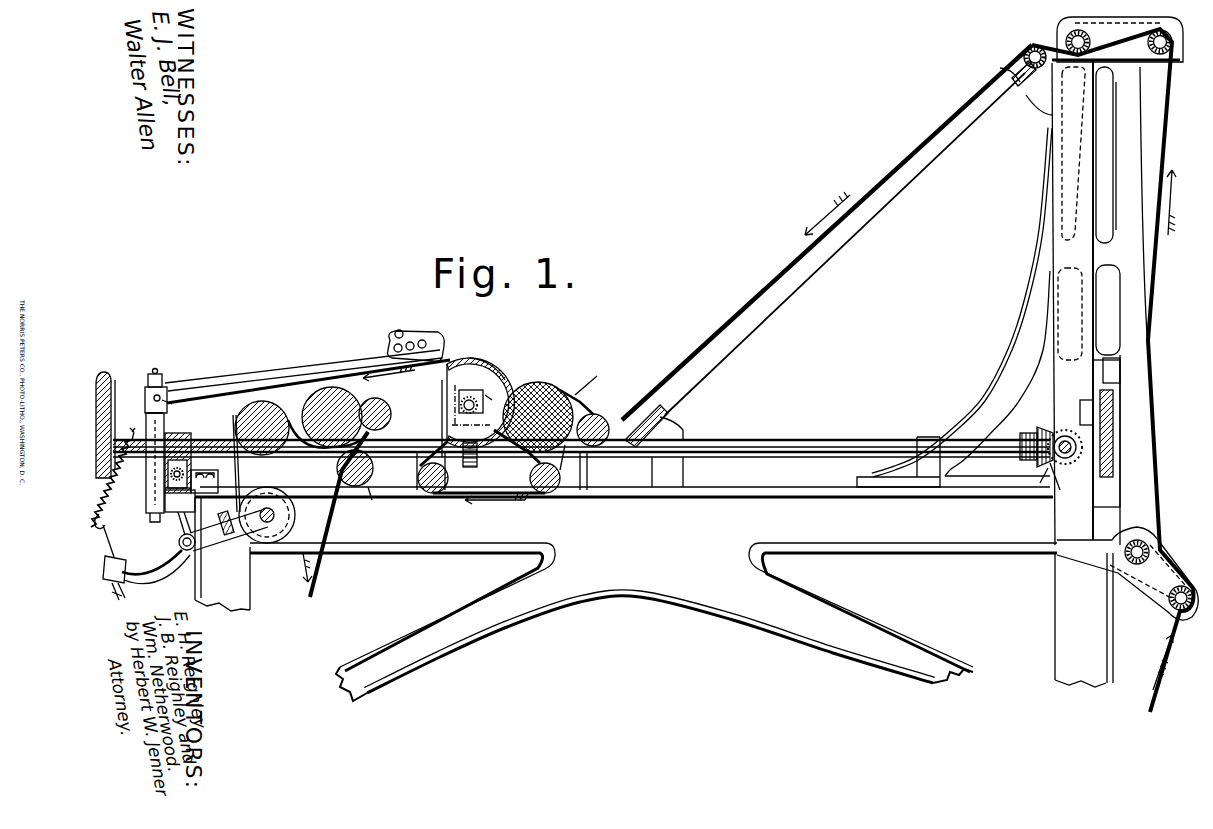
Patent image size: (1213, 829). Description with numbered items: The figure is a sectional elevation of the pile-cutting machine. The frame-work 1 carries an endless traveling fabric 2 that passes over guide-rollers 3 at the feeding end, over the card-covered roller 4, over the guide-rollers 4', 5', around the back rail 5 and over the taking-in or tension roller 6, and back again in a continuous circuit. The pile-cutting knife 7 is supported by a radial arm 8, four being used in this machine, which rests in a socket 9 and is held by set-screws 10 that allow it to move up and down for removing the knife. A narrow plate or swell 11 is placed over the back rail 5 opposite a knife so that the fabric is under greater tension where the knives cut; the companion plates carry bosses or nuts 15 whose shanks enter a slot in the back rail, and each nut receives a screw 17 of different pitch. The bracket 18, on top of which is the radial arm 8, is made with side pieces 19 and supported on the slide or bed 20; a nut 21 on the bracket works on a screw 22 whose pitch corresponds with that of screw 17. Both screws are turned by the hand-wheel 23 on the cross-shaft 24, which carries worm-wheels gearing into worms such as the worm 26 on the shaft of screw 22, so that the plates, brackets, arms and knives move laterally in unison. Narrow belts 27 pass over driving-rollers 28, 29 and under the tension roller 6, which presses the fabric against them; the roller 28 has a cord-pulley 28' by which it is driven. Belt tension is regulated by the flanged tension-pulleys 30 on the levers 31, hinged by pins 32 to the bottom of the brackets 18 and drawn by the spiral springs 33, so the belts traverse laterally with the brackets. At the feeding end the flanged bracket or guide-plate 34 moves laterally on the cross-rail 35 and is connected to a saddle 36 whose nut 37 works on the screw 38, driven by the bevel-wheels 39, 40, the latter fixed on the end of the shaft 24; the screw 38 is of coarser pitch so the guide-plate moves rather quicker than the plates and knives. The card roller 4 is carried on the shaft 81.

The frame-work 1 is at (654, 569).
The endless traveling fabric 2 is at (890, 185).
The guide-rollers 3 is at (1170, 600).
The card-covered roller 4 is at (571, 409).
The guide-roller 4' is at (547, 484).
The back rail 5 is at (480, 410).
The guide-roller 5' is at (481, 493).
The taking-in or tension roller 6 is at (318, 400).
The pile-cutting knife 7 is at (392, 350).
The radial arm 8 is at (265, 378).
The socket 9 is at (174, 408).
The set-screws 10 is at (145, 396).
The narrow plate or swell 11 is at (466, 360).
The boss or nut 15 is at (460, 400).
The screw 17 is at (488, 398).
The bracket 18 is at (150, 505).
The side pieces 19 is at (195, 500).
The slide or bed 20 is at (205, 467).
The nut 21 is at (165, 488).
The screw 22 is at (168, 470).
The hand-wheel 23 is at (108, 382).
The cross-shaft 24 is at (757, 448).
The worm 26 is at (478, 461).
The narrow belts 27 is at (258, 402).
The driving-roller 28 is at (389, 414).
The cord-pulley 28' is at (373, 502).
The driving-roller 29 is at (231, 420).
The tension-pulleys 30 is at (270, 492).
The levers 31 is at (215, 540).
The pins 32 is at (179, 542).
The spiral springs 33 is at (120, 493).
The bracket or guide-plate 34 is at (1035, 318).
The cross-rail 35 is at (1120, 432).
The saddle 36 is at (1120, 373).
The nut 37 is at (1065, 468).
The screw 38 is at (1055, 465).
The bevel-wheel 39 is at (1063, 430).
The bevel-wheel 40 is at (1045, 428).
The shaft 81 is at (598, 410).